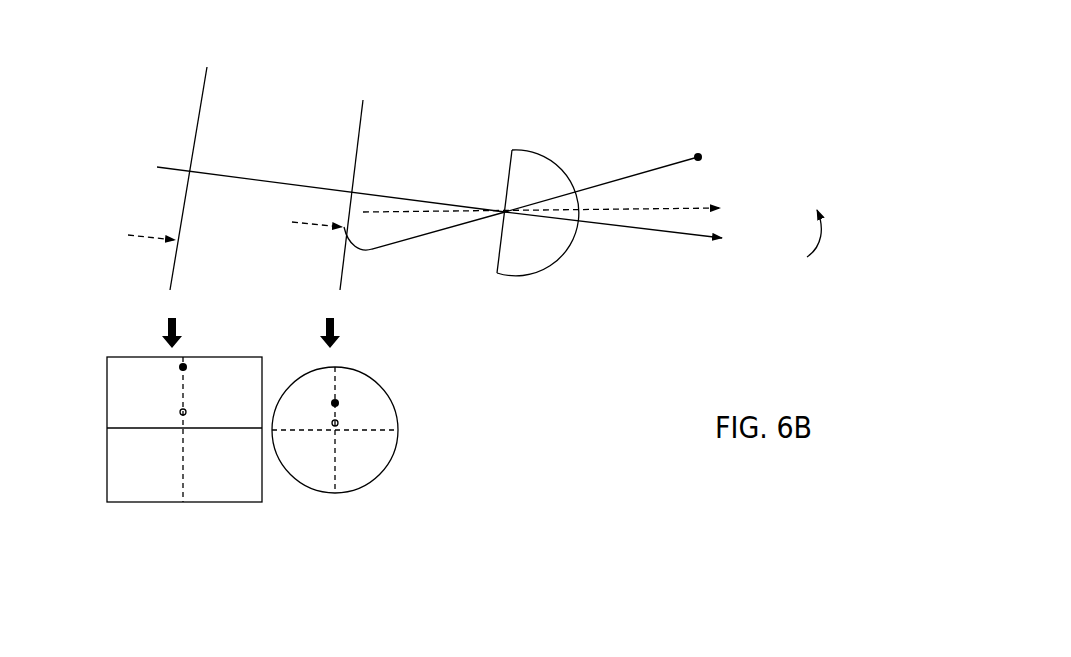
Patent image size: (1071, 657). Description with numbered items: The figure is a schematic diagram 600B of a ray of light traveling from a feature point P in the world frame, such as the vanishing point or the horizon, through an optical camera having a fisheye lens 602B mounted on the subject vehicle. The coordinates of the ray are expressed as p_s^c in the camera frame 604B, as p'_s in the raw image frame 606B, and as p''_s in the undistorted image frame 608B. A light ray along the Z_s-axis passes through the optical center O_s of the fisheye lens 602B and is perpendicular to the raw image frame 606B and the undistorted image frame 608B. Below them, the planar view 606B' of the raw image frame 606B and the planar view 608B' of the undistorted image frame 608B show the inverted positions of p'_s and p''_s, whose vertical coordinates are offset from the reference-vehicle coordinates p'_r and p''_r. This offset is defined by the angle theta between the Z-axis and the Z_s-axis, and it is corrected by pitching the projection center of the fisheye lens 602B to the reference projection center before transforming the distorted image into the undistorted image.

The schematic diagram 600B is at (794, 102).
The fisheye lens 602B is at (559, 141).
The camera frame 604B is at (497, 255).
The raw image frame 606B is at (305, 160).
The undistorted image frame 608B is at (145, 160).
The planar view of the raw image frame 606B' is at (410, 416).
The planar view of the undistorted image frame 608B' is at (277, 455).